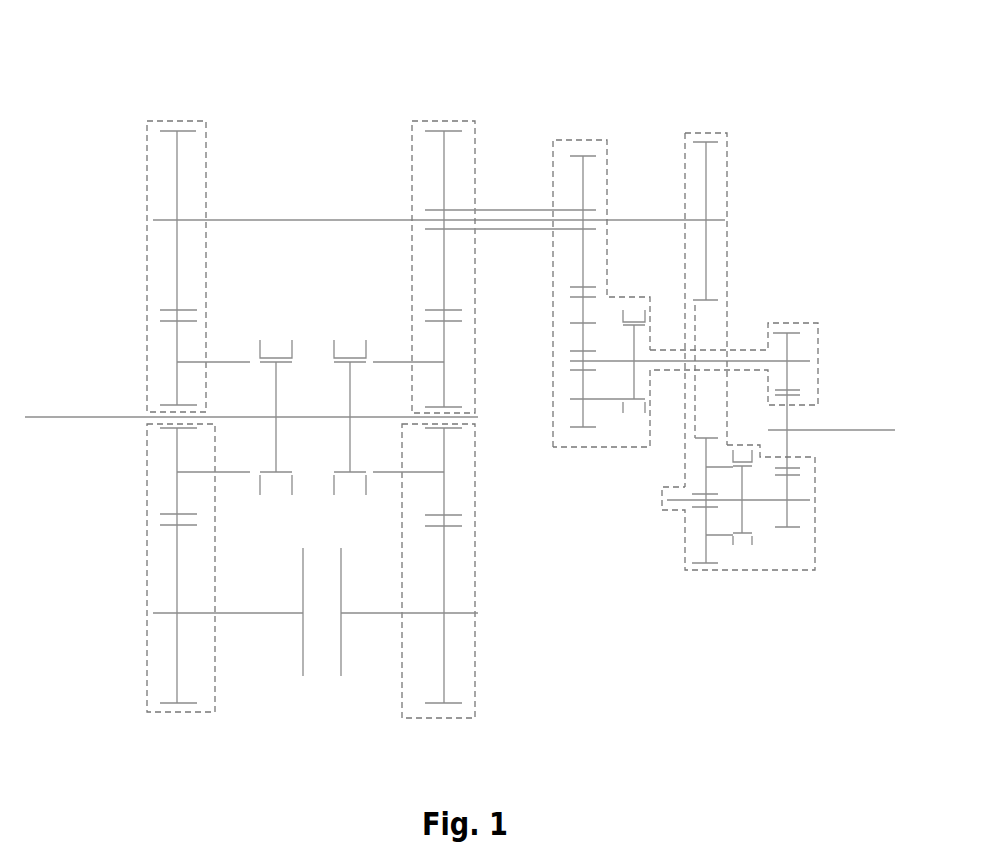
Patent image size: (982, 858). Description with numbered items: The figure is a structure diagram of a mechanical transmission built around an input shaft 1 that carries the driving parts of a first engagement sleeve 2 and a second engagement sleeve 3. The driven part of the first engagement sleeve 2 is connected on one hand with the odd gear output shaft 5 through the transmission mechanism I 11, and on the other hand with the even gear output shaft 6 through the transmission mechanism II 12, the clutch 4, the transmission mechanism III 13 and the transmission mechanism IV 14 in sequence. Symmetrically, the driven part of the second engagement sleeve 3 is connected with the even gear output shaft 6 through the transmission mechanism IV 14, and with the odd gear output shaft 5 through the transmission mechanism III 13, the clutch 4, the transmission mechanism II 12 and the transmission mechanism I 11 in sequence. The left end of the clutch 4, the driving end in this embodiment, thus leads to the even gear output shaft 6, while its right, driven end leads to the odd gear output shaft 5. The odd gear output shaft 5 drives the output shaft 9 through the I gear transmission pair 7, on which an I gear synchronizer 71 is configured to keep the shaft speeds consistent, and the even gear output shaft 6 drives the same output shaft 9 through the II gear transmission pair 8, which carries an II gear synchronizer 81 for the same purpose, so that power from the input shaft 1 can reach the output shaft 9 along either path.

The input shaft 1 is at (88, 415).
The first engagement sleeve 2 is at (350, 340).
The second engagement sleeve 3 is at (272, 345).
The clutch 4 is at (321, 674).
The odd gear output shaft 5 is at (500, 210).
The even gear output shaft 6 is at (623, 220).
The I gear transmission pair 7 is at (585, 138).
The I gear synchronizer 71 is at (633, 415).
The II gear transmission pair 8 is at (725, 133).
The II gear synchronizer 81 is at (742, 545).
The output shaft 9 is at (862, 430).
The transmission mechanism I 11 is at (413, 163).
The transmission mechanism II 12 is at (476, 580).
The transmission mechanism III 13 is at (148, 578).
The transmission mechanism IV 14 is at (147, 158).